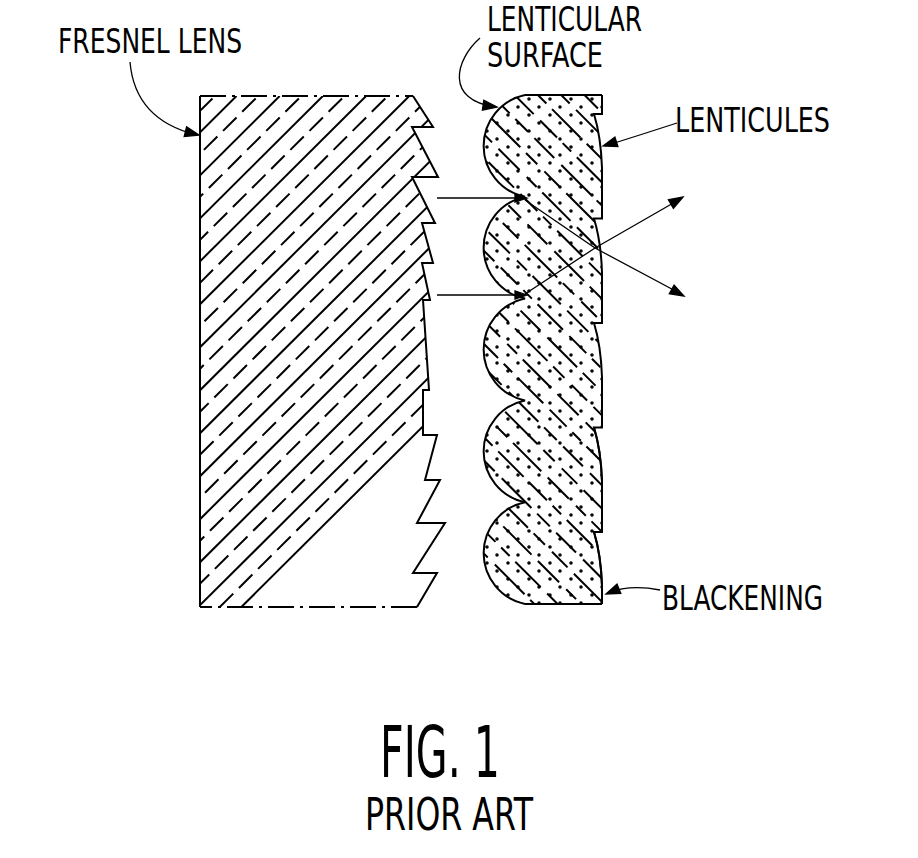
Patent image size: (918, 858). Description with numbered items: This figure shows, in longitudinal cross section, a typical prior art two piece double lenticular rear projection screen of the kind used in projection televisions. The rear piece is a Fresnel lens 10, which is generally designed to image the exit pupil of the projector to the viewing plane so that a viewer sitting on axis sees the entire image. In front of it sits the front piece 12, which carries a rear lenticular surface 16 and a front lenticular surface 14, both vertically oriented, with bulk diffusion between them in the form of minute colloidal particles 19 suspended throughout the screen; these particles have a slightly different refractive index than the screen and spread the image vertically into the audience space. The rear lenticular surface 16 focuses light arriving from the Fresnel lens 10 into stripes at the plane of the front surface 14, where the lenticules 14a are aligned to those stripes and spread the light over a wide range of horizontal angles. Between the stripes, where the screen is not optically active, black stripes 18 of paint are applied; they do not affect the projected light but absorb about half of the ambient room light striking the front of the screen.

The Fresnel lens 10 is at (200, 575).
The front piece 12 is at (538, 606).
The front lenticular surface 14 is at (617, 527).
The lenticules 14a is at (598, 467).
The rear lenticular surface 16 is at (492, 588).
The black stripes 18 is at (598, 392).
The colloidal particles 19 is at (599, 543).